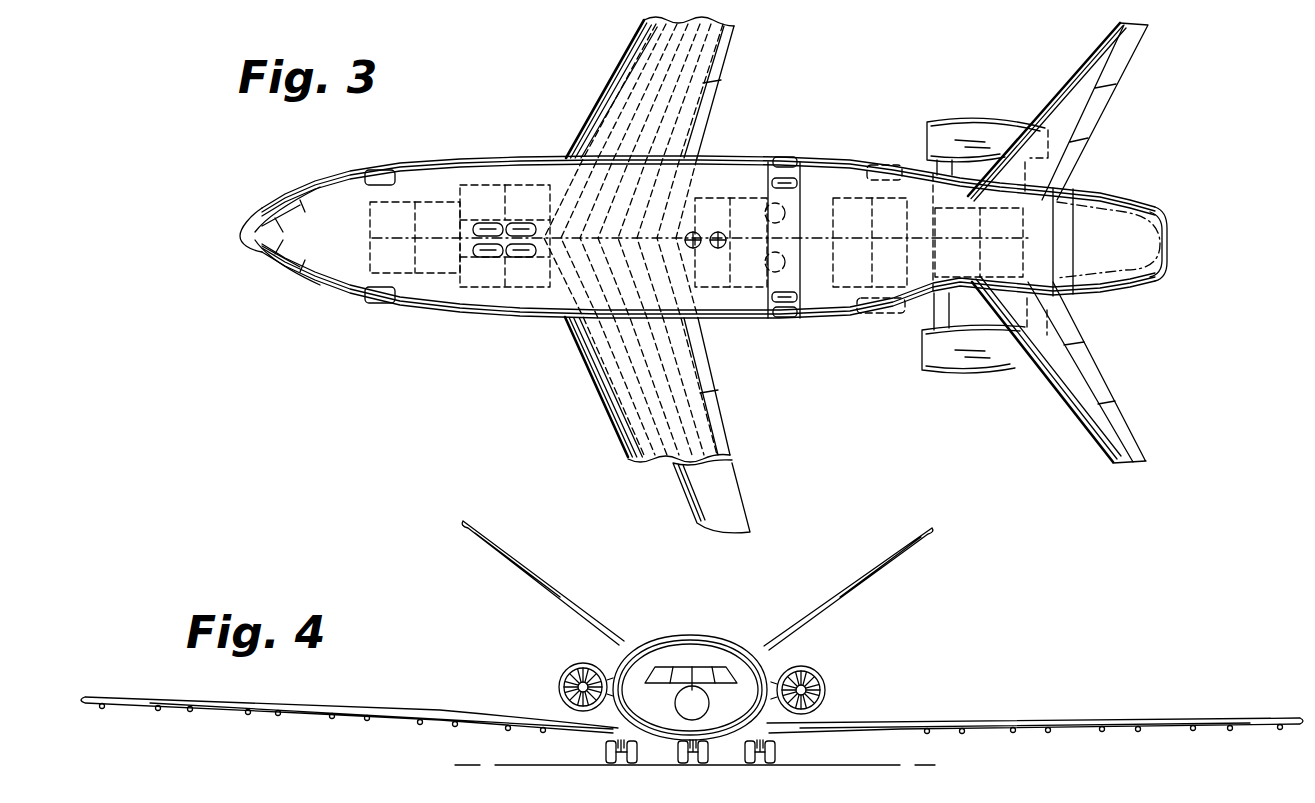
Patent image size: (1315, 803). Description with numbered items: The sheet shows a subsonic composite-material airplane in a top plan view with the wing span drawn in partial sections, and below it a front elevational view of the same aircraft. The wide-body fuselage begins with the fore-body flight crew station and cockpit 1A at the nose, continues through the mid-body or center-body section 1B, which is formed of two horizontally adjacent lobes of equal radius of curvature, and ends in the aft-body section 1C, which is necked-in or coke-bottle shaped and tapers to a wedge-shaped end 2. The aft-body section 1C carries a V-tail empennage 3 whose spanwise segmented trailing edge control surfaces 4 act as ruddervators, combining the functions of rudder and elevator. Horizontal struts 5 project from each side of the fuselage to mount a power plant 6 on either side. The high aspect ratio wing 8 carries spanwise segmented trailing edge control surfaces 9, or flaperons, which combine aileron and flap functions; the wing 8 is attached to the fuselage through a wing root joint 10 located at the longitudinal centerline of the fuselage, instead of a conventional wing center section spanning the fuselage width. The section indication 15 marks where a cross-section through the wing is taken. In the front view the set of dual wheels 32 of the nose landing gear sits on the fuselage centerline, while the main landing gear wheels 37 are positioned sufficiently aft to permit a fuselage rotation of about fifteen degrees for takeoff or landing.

In FIG. 3, the fore-body flight crew station and cockpit 1A is at (320, 172).
In FIG. 3, the mid-body or center-body section 1B is at (490, 148).
In FIG. 3, the aft-body section 1C is at (912, 162).
In FIG. 3, the wedge-shaped end 2 is at (1143, 178).
In FIG. 3, the V-tail empennage 3 is at (1084, 70).
In FIG. 4, the V-tail empennage 3 is at (516, 567).
In FIG. 3, the spanwise segmented trailing edge control surfaces 4 is at (1123, 73).
In FIG. 3, the horizontal struts 5 is at (1003, 150).
In FIG. 3, the power plant 6 is at (980, 117).
In FIG. 4, the power plant 6 is at (559, 675).
In FIG. 3, the high aspect ratio wing 8 is at (594, 105).
In FIG. 4, the high aspect ratio wing 8 is at (355, 706).
In FIG. 3, the spanwise segmented trailing edge control surfaces 9 is at (723, 68).
In FIG. 3, the wing root joint 10 is at (580, 245).
In FIG. 3, the section line 15 is at (606, 50).
In FIG. 4, the dual wheels 32 is at (678, 752).
In FIG. 4, the main landing gear wheels 37 is at (606, 747).